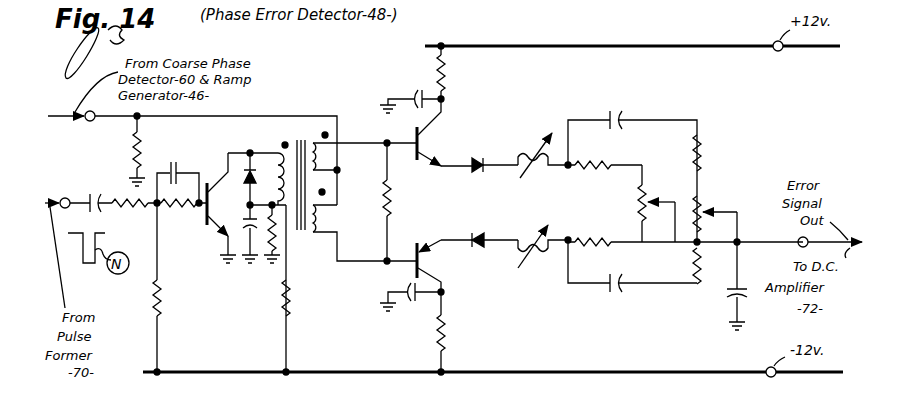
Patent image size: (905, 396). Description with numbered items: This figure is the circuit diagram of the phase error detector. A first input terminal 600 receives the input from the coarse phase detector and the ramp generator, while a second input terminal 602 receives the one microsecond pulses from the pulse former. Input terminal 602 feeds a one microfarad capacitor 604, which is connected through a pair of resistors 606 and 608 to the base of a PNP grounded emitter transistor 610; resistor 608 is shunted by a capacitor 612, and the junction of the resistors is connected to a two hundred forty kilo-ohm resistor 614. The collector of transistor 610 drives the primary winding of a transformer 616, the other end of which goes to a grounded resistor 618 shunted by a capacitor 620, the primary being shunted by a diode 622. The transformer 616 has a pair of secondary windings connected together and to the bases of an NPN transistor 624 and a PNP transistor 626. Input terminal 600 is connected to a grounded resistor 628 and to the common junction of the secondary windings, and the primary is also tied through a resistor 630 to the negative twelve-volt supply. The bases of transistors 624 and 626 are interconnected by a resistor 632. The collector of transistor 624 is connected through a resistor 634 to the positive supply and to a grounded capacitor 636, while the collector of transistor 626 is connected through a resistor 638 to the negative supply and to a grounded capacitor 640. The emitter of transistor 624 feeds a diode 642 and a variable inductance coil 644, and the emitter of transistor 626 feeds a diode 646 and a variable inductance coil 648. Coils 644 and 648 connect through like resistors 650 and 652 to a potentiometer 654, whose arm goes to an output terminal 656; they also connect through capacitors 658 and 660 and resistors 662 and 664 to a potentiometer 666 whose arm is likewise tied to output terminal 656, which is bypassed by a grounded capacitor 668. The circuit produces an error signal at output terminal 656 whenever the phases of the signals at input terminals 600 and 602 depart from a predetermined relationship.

The first input terminal 600 is at (90, 124).
The second input terminal 602 is at (72, 196).
The capacitor 604 is at (85, 209).
The resistor 606 is at (113, 208).
The resistor 608 is at (176, 210).
The transistor 610 is at (222, 216).
The capacitor 612 is at (181, 155).
The resistor 614 is at (160, 299).
The transformer 616 is at (306, 134).
The resistor 618 is at (284, 240).
The capacitor 620 is at (256, 240).
The diode 622 is at (249, 166).
The transistor 624 is at (417, 165).
The transistor 626 is at (416, 264).
The resistor 628 is at (140, 148).
The resistor 630 is at (290, 292).
The resistor 632 is at (389, 206).
The resistor 634 is at (442, 88).
The capacitor 636 is at (412, 94).
The resistor 638 is at (445, 334).
The capacitor 640 is at (426, 303).
The diode 642 is at (486, 135).
The variable inductance coil 644 is at (520, 152).
The diode 646 is at (470, 237).
The variable inductance coil 648 is at (522, 252).
The resistor 650 is at (595, 172).
The resistor 652 is at (590, 236).
The potentiometer 654 is at (640, 196).
The output terminal 656 is at (800, 240).
The capacitor 658 is at (623, 127).
The capacitor 660 is at (600, 291).
The resistor 662 is at (700, 146).
The resistor 664 is at (697, 263).
The potentiometer 666 is at (699, 206).
The capacitor 668 is at (745, 299).